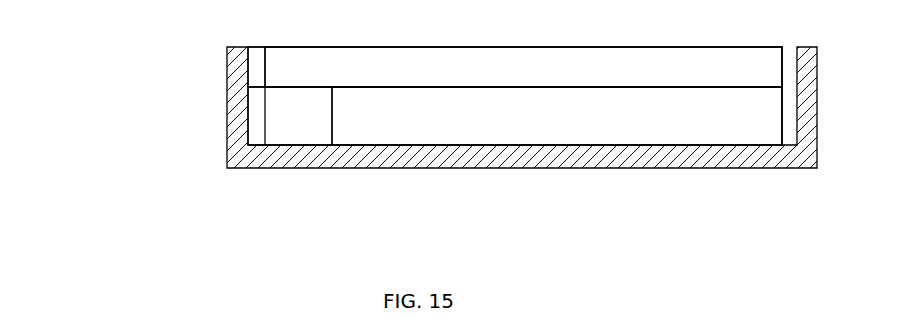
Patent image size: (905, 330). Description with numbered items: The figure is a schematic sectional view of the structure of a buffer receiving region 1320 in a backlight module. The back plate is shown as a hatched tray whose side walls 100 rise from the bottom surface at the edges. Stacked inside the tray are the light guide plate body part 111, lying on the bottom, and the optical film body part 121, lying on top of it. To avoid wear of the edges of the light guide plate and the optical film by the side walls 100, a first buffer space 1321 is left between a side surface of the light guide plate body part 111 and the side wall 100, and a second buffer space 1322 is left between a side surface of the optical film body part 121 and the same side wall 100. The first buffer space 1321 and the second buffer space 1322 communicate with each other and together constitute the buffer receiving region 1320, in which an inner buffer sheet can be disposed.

The side wall 100 is at (232, 135).
The buffer receiving region 1320 is at (112, 43).
The first buffer space 1321 is at (252, 123).
The second buffer space 1322 is at (253, 65).
The light guide plate body part 111 is at (372, 135).
The optical film body part 121 is at (475, 75).